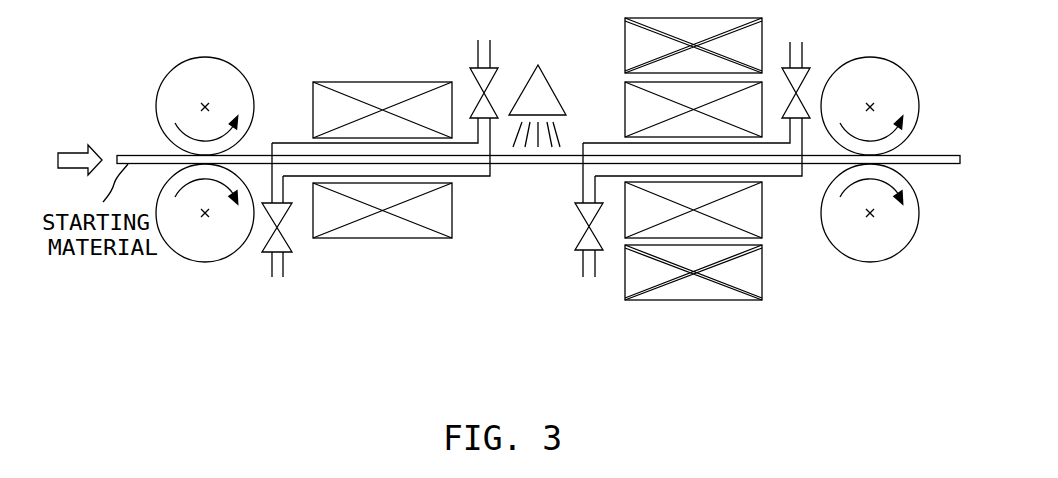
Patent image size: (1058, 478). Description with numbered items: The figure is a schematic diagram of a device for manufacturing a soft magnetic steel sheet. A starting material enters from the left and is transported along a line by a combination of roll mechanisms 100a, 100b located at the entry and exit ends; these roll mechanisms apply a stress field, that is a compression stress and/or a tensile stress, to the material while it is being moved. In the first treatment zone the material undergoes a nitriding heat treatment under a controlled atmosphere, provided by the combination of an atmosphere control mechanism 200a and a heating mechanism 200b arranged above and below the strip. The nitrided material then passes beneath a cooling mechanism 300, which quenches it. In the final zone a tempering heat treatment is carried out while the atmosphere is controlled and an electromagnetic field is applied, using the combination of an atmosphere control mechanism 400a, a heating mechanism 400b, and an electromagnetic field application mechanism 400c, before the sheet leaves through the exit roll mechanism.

The roll mechanism 100a is at (188, 243).
The roll mechanism 100b is at (878, 243).
The atmosphere control mechanism 200a is at (283, 263).
The heating mechanism 200b is at (420, 232).
The cooling mechanism 300 is at (540, 82).
The atmosphere control mechanism 400a is at (582, 253).
The heating mechanism 400b is at (755, 215).
The electromagnetic field application mechanism 400c is at (715, 290).